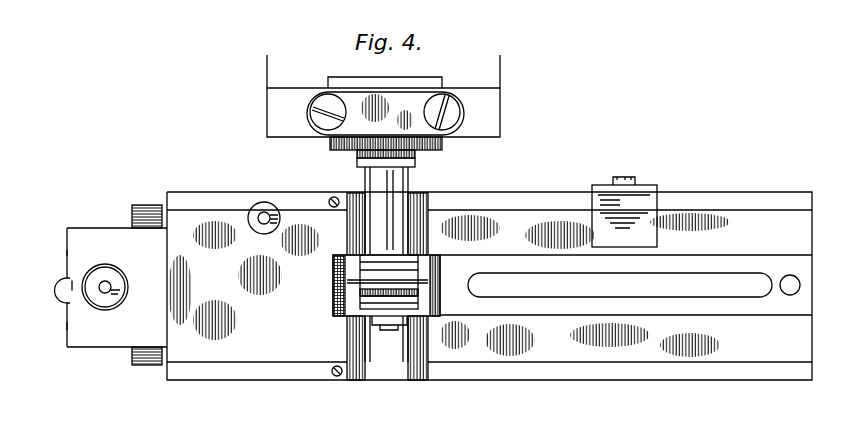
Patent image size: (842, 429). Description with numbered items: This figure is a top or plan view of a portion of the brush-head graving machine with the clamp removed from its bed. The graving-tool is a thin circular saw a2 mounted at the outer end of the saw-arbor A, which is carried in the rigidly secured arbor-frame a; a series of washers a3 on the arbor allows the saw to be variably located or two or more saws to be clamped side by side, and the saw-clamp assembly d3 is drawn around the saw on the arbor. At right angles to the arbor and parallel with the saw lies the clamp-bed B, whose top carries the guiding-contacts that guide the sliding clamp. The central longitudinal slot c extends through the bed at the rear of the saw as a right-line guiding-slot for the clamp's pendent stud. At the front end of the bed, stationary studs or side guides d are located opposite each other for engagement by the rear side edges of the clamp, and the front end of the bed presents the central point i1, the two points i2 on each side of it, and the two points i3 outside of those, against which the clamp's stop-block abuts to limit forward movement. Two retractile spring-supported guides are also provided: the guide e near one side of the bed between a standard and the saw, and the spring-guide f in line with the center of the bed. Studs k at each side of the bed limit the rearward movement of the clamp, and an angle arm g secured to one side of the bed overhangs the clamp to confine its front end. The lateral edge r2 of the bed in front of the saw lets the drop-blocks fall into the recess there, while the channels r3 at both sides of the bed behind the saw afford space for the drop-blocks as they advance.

The arbor-frame a is at (383, 111).
The saw-arbor A is at (386, 264).
The lateral edge of the bed r2 is at (347, 345).
The channel r3 is at (429, 286).
The slide box d3 is at (386, 285).
The washers a3 is at (381, 292).
The graving-saw a2 is at (422, 287).
The clamp-bed B is at (433, 286).
The central longitudinal slot c is at (634, 285).
The angle arm g is at (624, 212).
The stationary studs or side guides d is at (147, 288).
The spring-guide f is at (112, 285).
The retractile guide e is at (267, 224).
The studs k is at (344, 388).
The central point i1 is at (70, 287).
The points i2 is at (66, 307).
The points i3 is at (66, 316).